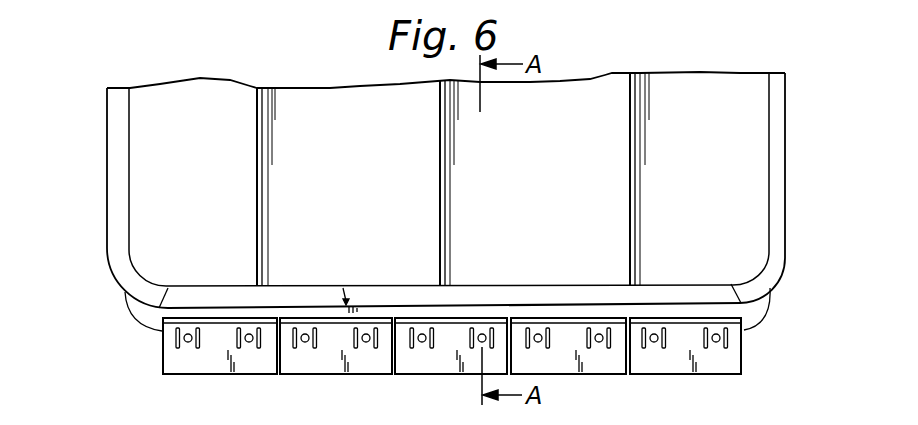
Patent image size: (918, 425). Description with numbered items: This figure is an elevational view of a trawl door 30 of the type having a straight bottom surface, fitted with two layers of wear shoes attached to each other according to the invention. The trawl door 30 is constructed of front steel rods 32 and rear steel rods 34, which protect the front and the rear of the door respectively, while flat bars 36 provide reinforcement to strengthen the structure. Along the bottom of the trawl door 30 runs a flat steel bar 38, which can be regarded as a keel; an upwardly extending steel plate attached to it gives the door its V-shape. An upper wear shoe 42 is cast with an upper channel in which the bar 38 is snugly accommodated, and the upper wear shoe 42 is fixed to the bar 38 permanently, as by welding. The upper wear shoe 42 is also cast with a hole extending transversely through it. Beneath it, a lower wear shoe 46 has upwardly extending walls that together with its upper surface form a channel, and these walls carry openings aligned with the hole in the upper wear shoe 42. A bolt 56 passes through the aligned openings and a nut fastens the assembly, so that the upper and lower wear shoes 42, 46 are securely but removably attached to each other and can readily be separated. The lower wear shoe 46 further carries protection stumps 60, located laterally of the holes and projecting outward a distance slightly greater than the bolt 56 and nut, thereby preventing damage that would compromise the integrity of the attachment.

The trawl door 30 is at (616, 72).
The front steel rods 32 is at (786, 177).
The rear steel rods 34 is at (107, 187).
The flat bars 36 is at (640, 192).
The flat steel bar 38 is at (757, 310).
The upper wear shoe 42 is at (452, 368).
The lower wear shoe 46 is at (320, 380).
The bolt 56 is at (653, 346).
The protection stumps 60 is at (261, 350).